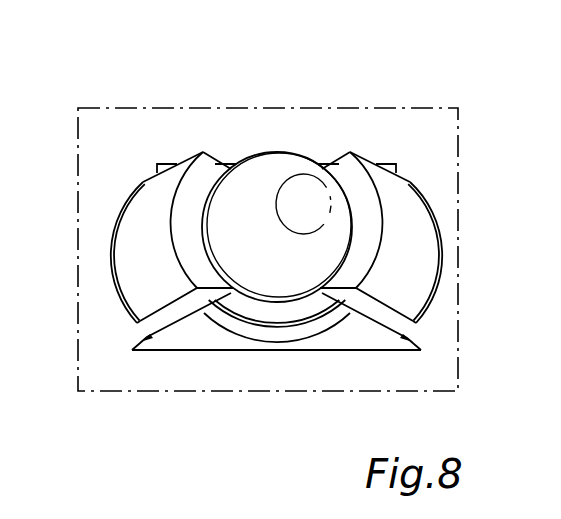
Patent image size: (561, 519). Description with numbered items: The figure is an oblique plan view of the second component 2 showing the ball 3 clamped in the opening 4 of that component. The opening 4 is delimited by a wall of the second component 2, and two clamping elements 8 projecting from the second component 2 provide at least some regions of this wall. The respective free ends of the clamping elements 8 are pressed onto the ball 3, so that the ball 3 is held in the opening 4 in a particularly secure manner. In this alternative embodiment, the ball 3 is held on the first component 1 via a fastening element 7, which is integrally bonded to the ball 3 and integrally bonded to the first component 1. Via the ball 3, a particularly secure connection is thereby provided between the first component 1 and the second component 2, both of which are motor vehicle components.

The first component 1 is at (340, 337).
The second component 2 is at (105, 328).
The ball 3 is at (258, 268).
The opening 4 is at (240, 128).
The fastening element 7 is at (270, 313).
The clamping elements 8 is at (138, 242).